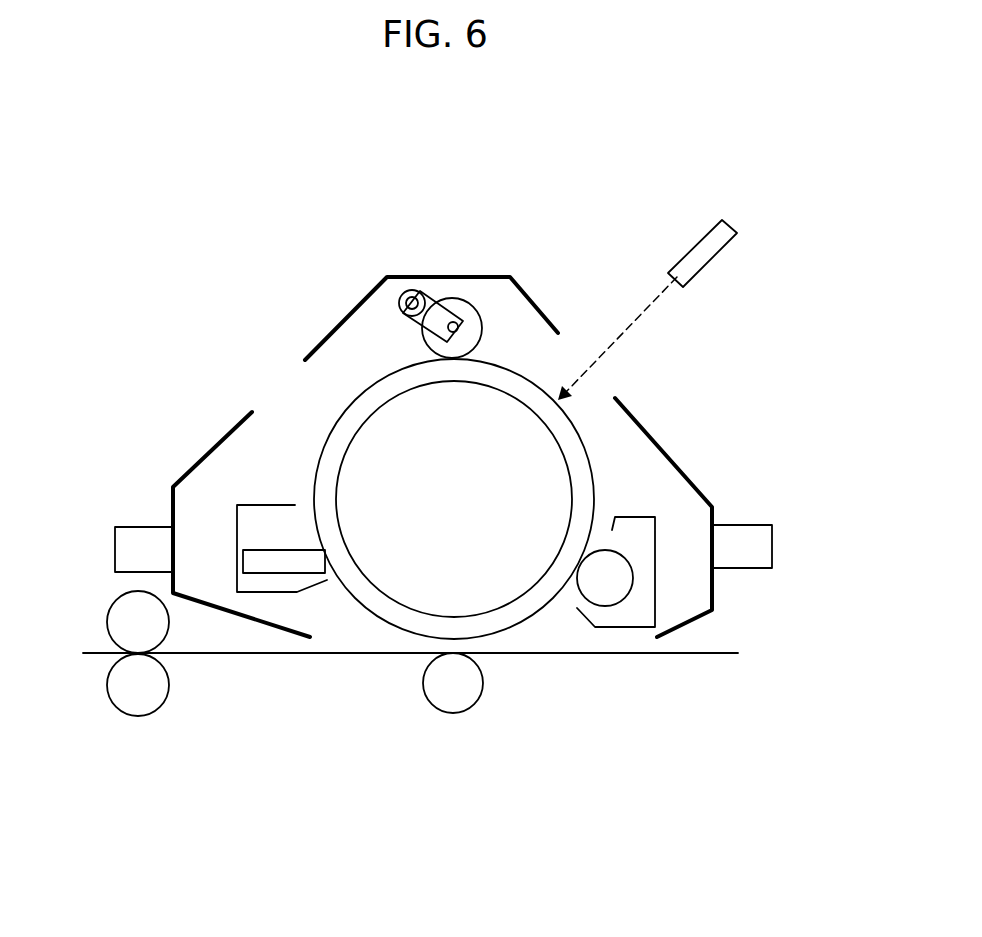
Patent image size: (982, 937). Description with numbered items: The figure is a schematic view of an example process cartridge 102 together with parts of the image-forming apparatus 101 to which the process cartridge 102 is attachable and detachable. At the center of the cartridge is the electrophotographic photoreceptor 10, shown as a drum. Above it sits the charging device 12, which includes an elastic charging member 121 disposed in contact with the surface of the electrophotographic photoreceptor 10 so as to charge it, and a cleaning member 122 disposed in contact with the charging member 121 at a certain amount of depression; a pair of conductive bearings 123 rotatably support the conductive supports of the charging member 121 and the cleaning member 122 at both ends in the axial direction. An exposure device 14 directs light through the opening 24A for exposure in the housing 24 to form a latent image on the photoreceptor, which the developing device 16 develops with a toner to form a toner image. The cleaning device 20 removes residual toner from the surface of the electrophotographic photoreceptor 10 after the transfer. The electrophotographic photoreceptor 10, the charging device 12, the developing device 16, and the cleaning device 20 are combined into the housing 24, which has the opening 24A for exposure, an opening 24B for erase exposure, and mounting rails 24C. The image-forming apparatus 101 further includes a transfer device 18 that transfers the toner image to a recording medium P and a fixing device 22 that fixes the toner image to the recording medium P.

The electrophotographic photoreceptor 10 is at (373, 387).
The charging device 12 is at (433, 278).
The exposure device 14 is at (707, 257).
The developing device 16 is at (632, 517).
The transfer device 18 is at (455, 703).
The cleaning device 20 is at (263, 505).
The fixing device 22 is at (140, 707).
The housing 24 is at (673, 460).
The opening for exposure 24A is at (580, 352).
The opening for erase exposure 24B is at (288, 382).
The mounting rails 24C is at (142, 525).
The image-forming apparatus 101 is at (539, 150).
The process cartridge 102 is at (622, 398).
The charging member 121 is at (463, 308).
The cleaning member 122 is at (407, 290).
The conductive bearings 123 is at (437, 317).
The recording medium P is at (645, 654).